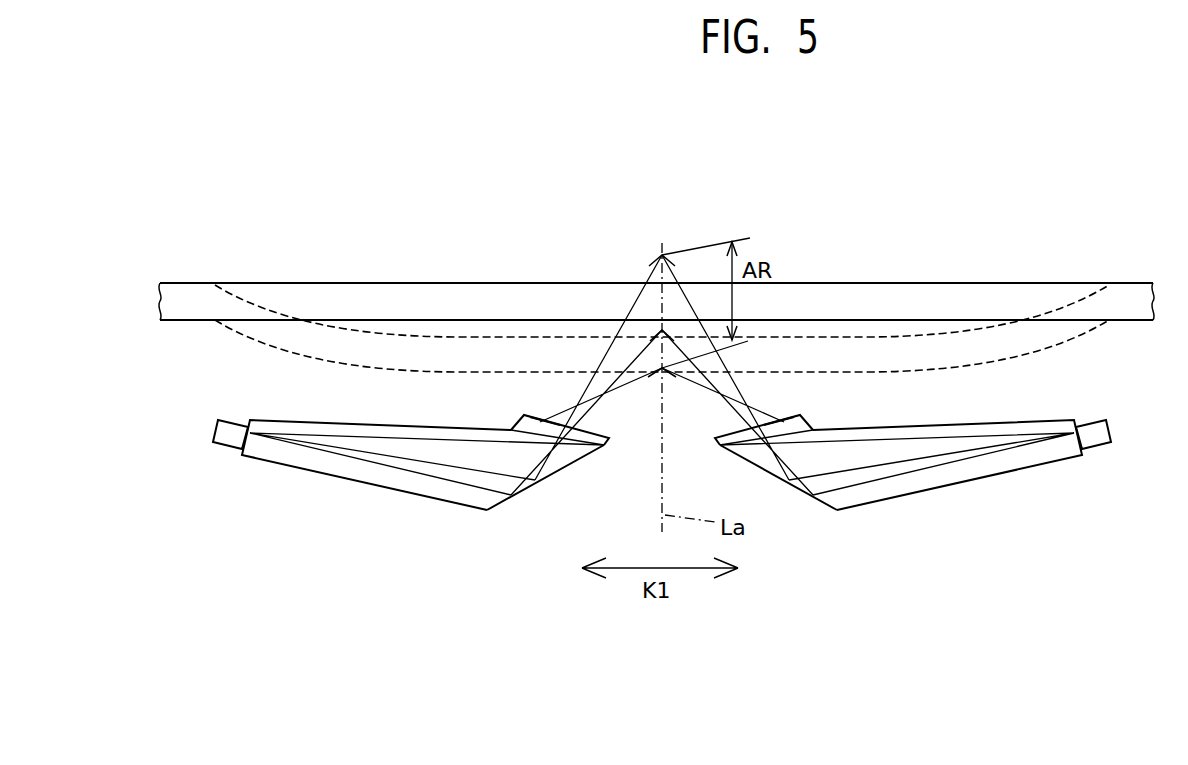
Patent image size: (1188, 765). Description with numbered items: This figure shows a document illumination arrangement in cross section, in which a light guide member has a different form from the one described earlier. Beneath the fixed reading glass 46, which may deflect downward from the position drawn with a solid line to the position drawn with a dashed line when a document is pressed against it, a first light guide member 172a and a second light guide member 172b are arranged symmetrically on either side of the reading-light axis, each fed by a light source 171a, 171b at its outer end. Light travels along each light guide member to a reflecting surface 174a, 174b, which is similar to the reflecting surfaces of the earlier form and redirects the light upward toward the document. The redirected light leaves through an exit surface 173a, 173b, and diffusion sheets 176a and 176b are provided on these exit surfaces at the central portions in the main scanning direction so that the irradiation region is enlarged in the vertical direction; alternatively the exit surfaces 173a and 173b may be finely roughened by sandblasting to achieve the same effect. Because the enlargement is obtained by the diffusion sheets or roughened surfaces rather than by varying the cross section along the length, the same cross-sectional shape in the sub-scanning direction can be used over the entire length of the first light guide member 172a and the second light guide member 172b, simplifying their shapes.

The fixed reading glass 46 is at (427, 342).
The light source 171a is at (217, 422).
The light source 171b is at (1107, 422).
The first light guide member 172a is at (295, 420).
The second light guide member 172b is at (1029, 420).
The exit surface 173a is at (528, 414).
The exit surface 173b is at (796, 414).
The reflecting surface 174a is at (553, 478).
The reflecting surface 174b is at (771, 478).
The diffusion sheet 176a is at (552, 423).
The diffusion sheet 176b is at (772, 423).